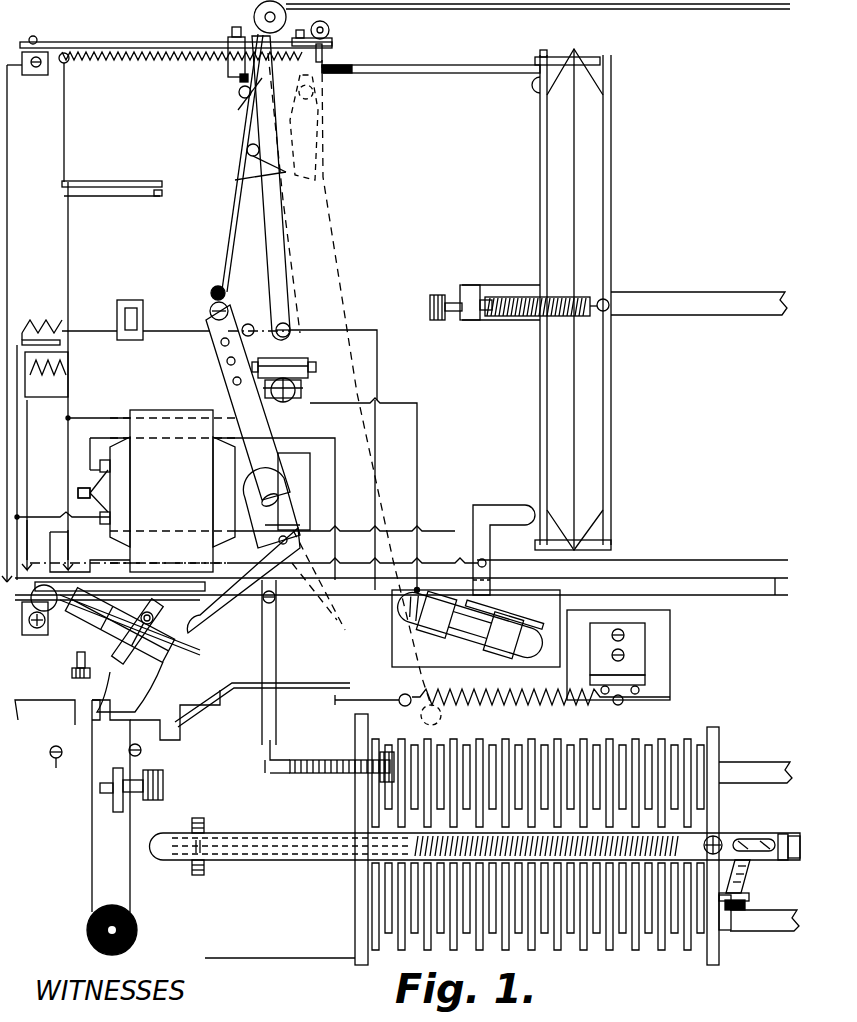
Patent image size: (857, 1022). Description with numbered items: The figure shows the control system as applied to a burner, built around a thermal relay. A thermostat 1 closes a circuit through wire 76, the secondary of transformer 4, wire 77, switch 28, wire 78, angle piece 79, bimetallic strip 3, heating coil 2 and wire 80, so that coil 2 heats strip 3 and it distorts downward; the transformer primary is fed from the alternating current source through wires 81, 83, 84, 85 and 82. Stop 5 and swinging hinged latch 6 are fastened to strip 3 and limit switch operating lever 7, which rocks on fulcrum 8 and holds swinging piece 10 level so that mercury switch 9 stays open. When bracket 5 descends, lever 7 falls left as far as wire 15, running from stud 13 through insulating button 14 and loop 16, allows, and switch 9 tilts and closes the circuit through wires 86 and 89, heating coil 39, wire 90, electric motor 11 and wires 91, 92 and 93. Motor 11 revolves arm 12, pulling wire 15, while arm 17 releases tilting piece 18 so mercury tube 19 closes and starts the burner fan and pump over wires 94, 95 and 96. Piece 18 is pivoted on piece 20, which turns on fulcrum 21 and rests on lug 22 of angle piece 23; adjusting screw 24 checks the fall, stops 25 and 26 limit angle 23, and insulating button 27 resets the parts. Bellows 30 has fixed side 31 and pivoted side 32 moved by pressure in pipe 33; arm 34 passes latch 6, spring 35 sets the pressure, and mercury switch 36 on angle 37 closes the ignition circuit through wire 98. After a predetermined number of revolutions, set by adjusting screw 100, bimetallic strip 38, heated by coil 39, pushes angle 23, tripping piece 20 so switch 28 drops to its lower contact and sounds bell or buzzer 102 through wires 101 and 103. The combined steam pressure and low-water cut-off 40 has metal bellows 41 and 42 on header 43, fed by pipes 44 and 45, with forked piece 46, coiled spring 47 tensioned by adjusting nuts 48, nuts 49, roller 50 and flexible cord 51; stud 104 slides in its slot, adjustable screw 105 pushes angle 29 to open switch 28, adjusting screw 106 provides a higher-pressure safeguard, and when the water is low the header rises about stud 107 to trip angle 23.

The thermostat 1 is at (113, 182).
The heating coil 2 is at (170, 60).
The bimetallic strip 3 is at (160, 32).
The transformer 4 is at (44, 327).
The stop 5 is at (232, 70).
The swinging hinged latch 6 is at (325, 52).
The switch operating lever 7 is at (268, 256).
The fulcrum 8 is at (290, 326).
The mercury switch 9 is at (303, 392).
The swinging piece 10 is at (308, 356).
The electric motor 11 is at (160, 427).
The arm 12 is at (232, 372).
The stud 13 is at (230, 312).
The insulating button 14 is at (211, 292).
The wire 15 is at (757, 6).
The loop 16 is at (240, 170).
The arm 17 is at (268, 583).
The tilting piece 18 is at (168, 653).
The mercury tube 19 is at (110, 660).
The piece 20 is at (148, 680).
The fulcrum 21 is at (37, 628).
The lug 22 is at (95, 722).
The angle piece 23 is at (106, 876).
The adjusting screw 24 is at (72, 675).
The stop 25 is at (56, 765).
The stop 26 is at (141, 748).
The insulating button 27 is at (138, 930).
The switch 28 is at (245, 548).
The angle 29 is at (276, 643).
The bellows 30 is at (598, 268).
The side 31 is at (608, 404).
The side 32 is at (545, 404).
The pipe 33 is at (745, 292).
The arm 34 is at (440, 73).
The spring 35 is at (525, 318).
The mercury switch 36 is at (462, 628).
The angle 37 is at (500, 510).
The bimetallic strip 38 is at (300, 683).
The heating coil 39 is at (548, 704).
The combined steam pressure and low-water cut-off 40 is at (470, 716).
The metal bellows 41 is at (658, 705).
The metal bellows 42 is at (660, 950).
The metal header 43 is at (280, 958).
The pipe 44 is at (745, 762).
The pipe 45 is at (762, 920).
The forked piece 46 is at (155, 850).
The coiled spring 47 is at (680, 835).
The adjusting nuts 48 is at (190, 826).
The nuts 49 is at (782, 834).
The roller 50 is at (752, 839).
The flexible cord 51 is at (748, 880).
The wire 76 is at (68, 244).
The wire 77 is at (25, 378).
The wire 78 is at (7, 244).
The angle piece 79 is at (34, 67).
The wire 80 is at (66, 117).
The wire 81 is at (36, 543).
The wire 82 is at (90, 551).
The wire 83 is at (27, 430).
The wire 84 is at (68, 408).
The wire 85 is at (68, 448).
The wire 86 is at (417, 480).
The wire 89 is at (410, 590).
The wire 90 is at (335, 487).
The wire 91 is at (96, 520).
The wire 92 is at (47, 517).
The wire 93 is at (90, 418).
The wire 94 is at (760, 560).
The wire 95 is at (401, 597).
The wire 96 is at (23, 569).
The wire 98 is at (728, 595).
The adjusting screw 100 is at (614, 705).
The wire 101 is at (180, 331).
The bell or buzzer 102 is at (130, 300).
The wire 103 is at (90, 331).
The stud 104 is at (195, 875).
The adjustable screw 105 is at (322, 760).
The adjusting screw 106 is at (160, 768).
The stud 107 is at (718, 853).